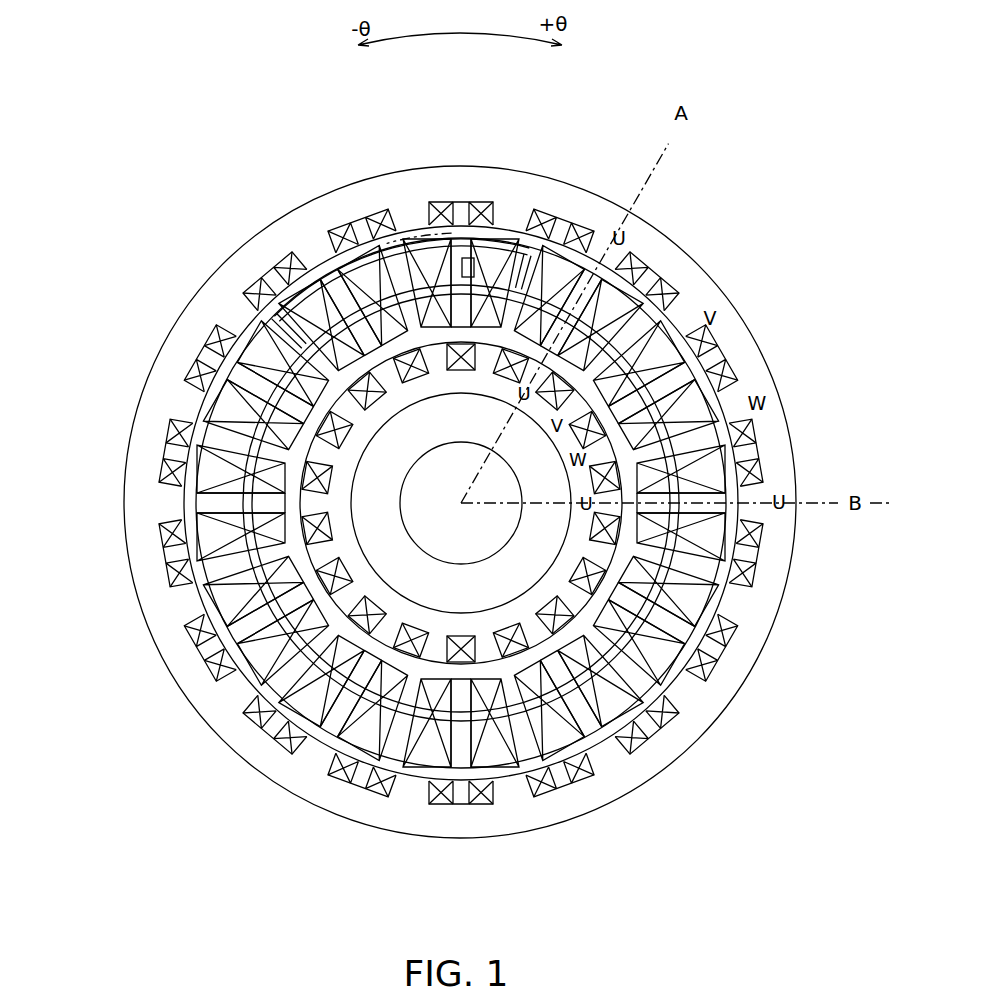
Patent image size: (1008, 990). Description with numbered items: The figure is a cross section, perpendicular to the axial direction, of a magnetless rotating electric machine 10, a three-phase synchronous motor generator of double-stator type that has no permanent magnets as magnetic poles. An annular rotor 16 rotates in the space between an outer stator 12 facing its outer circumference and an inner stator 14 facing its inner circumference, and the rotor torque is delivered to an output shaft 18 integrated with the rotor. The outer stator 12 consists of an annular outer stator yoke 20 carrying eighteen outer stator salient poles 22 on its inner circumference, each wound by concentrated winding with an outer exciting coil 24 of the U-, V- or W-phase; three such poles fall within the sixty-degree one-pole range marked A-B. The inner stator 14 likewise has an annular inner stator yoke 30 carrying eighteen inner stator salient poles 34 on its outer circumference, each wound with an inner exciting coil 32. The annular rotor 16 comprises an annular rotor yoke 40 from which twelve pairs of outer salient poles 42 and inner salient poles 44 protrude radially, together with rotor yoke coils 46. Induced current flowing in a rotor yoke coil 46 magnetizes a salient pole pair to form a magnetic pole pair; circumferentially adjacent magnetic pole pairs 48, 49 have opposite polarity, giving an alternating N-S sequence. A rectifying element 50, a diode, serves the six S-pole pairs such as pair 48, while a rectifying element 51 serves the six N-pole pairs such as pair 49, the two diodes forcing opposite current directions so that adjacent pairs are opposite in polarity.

The magnetless rotating electric machine 10 is at (140, 711).
The outer stator 12 is at (408, 503).
The inner stator 14 is at (461, 503).
The annular rotor 16 is at (560, 241).
The output shaft 18 is at (460, 488).
The outer stator yoke 20 is at (158, 457).
The outer stator salient pole 22 is at (195, 402).
The outer exciting coil 24 is at (168, 430).
The inner stator yoke 30 is at (412, 625).
The inner exciting coil 32 is at (461, 503).
The inner stator salient pole 34 is at (338, 604).
The rotor yoke 40 is at (461, 503).
The outer salient pole 42 is at (461, 503).
The inner salient pole 44 is at (468, 372).
The rotor yoke coil 46 is at (500, 250).
The magnetic pole pair 48 is at (470, 257).
The magnetic pole pair 49 is at (277, 312).
The rectifying element 50 is at (523, 247).
The rectifying element 51 is at (372, 298).